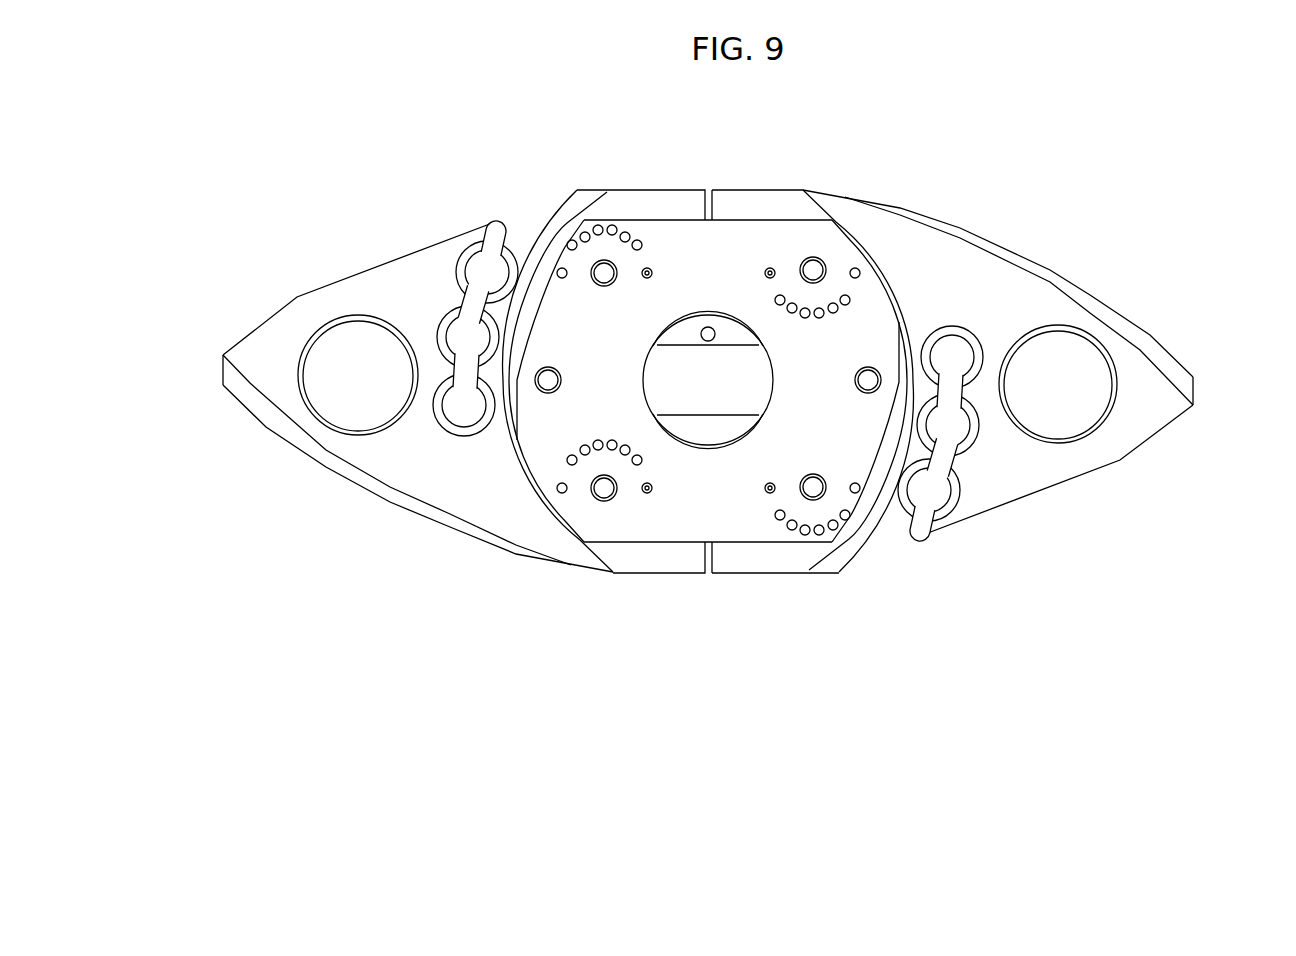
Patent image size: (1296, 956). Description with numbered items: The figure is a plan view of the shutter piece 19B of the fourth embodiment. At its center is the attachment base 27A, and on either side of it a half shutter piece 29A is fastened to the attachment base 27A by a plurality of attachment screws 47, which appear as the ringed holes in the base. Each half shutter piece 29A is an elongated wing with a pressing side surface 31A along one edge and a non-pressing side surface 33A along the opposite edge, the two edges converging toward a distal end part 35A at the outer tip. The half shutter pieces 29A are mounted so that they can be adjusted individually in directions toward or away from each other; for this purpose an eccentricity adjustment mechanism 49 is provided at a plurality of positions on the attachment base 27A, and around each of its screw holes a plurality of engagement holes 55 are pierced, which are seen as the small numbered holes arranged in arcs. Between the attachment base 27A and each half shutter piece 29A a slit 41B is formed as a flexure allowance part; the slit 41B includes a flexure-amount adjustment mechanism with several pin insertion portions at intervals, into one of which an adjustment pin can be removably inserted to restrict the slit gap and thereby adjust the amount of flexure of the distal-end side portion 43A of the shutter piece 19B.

The shutter piece 19B is at (708, 416).
The attachment base 27A is at (732, 242).
The half shutter piece 29A is at (708, 369).
The pressing side surface 31A is at (310, 447).
The non-pressing side surface 33A is at (317, 290).
The distal end part 35A is at (222, 362).
The slit 41B is at (518, 225).
The distal-end side portion 43A is at (265, 363).
The attachment screw 47 is at (812, 266).
The eccentricity adjustment mechanism 49 is at (658, 239).
The engagement hole 55 is at (819, 535).